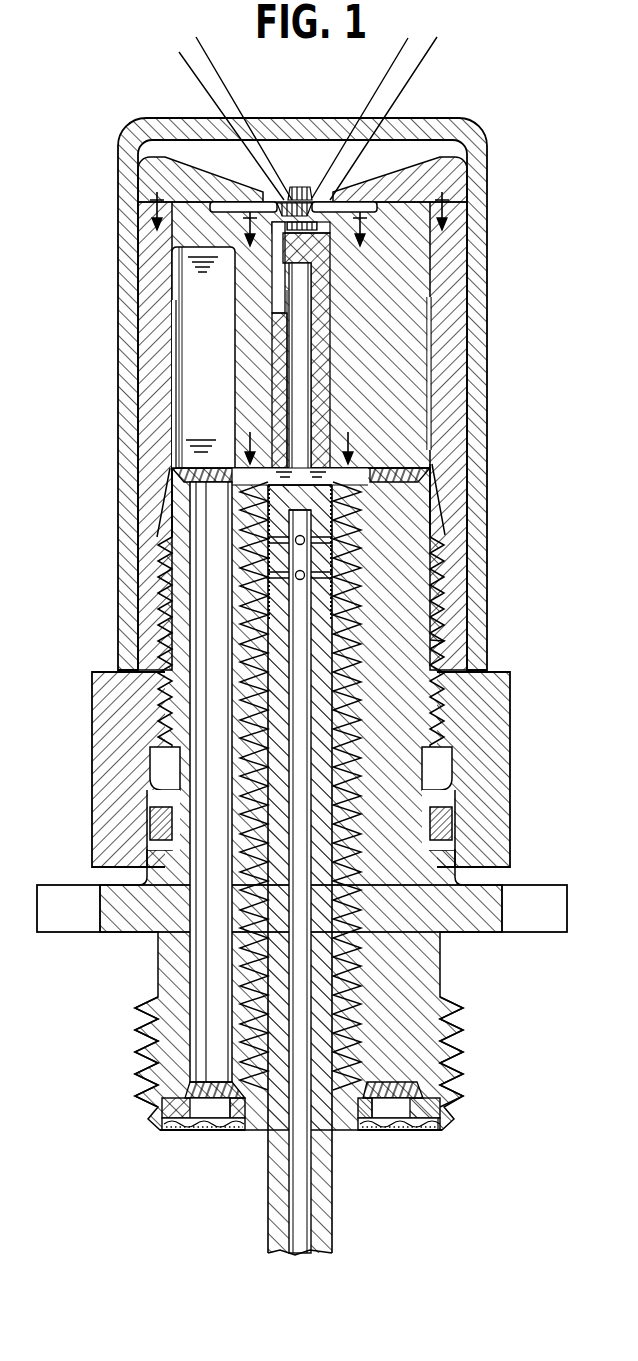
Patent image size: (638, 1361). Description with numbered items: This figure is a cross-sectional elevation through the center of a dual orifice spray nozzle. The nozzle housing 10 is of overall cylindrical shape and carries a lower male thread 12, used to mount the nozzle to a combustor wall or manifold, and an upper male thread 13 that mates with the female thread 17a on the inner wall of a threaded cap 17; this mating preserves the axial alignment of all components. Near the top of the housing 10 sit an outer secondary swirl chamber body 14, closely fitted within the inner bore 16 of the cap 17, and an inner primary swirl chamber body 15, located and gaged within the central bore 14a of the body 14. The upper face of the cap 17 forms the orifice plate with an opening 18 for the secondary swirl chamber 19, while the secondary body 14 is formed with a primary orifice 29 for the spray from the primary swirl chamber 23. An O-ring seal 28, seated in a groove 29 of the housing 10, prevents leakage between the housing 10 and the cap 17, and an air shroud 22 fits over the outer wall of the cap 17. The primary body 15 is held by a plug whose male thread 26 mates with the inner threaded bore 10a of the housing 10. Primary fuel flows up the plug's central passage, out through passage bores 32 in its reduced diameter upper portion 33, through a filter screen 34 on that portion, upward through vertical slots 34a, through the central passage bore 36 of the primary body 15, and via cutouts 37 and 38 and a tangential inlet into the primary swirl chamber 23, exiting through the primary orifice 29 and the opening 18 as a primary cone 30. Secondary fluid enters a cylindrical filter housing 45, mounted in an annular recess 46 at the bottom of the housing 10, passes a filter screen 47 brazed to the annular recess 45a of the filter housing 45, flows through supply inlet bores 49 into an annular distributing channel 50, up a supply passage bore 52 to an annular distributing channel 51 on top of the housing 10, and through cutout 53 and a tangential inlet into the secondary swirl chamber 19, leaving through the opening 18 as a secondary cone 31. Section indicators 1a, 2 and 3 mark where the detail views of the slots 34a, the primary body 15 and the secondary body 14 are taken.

The nozzle housing 10 is at (448, 962).
The inner threaded bore 10a is at (340, 952).
The lower male thread 12 is at (463, 1075).
The upper male thread 13 is at (440, 612).
The outer secondary swirl chamber body 14 is at (415, 358).
The central bore 14a is at (278, 393).
The inner primary swirl chamber body 15 is at (283, 337).
The inner bore 16 is at (423, 280).
The threaded cap 17 is at (463, 420).
The female thread 17a is at (438, 650).
The orifice opening 18 is at (328, 200).
The secondary swirl chamber 19 is at (347, 202).
The air shroud 22 is at (477, 258).
The primary swirl chamber 23 is at (277, 262).
The male thread 26 is at (340, 788).
The O-ring seal 28 is at (452, 813).
The primary orifice 29 is at (452, 832).
The primary cone 30 is at (423, 63).
The secondary cone 31 is at (208, 53).
The passage bores 32 is at (304, 574).
The reduced diameter upper portion 33 is at (331, 597).
The filter screen 34 is at (333, 618).
The vertical slots 34a is at (312, 474).
The central passage bore 36 is at (300, 372).
The cutout 37 is at (280, 293).
The cutout 38 is at (278, 228).
The filter housing 45 is at (445, 1112).
The annular recess 45a is at (173, 1130).
The annular recess 46 is at (437, 1130).
The filter screen 47 is at (203, 1133).
The supply inlet bores 49 is at (402, 1120).
The annular distributing channel 50 is at (200, 1093).
The annular distributing channel 51 is at (170, 470).
The supply passage bore 52 is at (208, 957).
The cutout 53 is at (190, 443).
The section line 1a is at (299, 437).
The section line 2 is at (305, 244).
The section line 3 is at (300, 222).